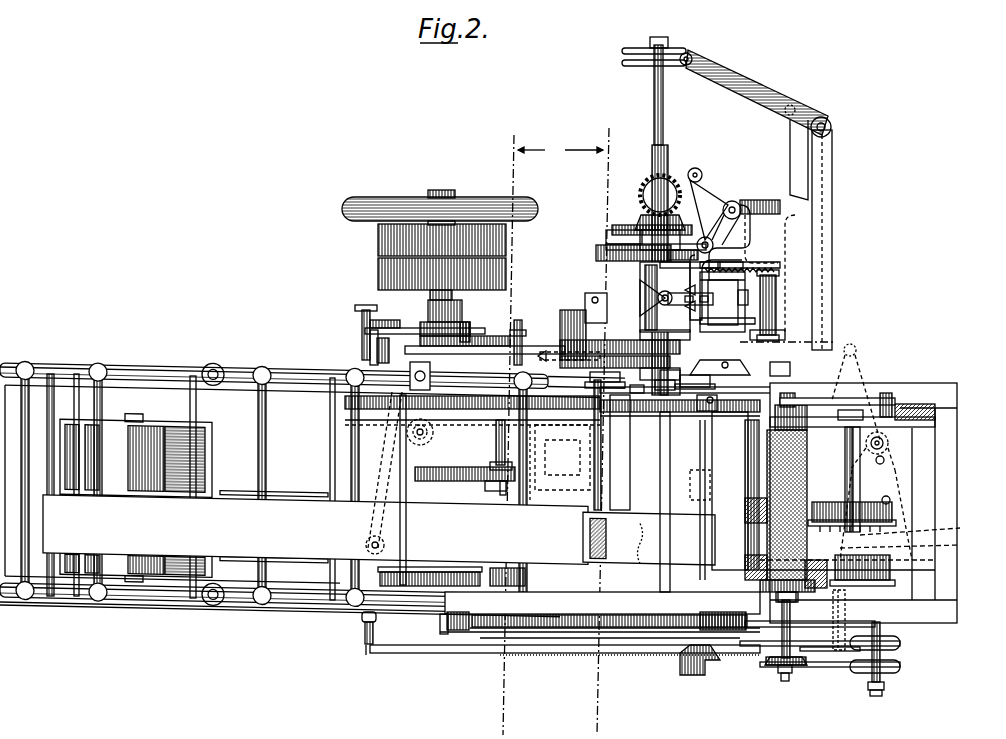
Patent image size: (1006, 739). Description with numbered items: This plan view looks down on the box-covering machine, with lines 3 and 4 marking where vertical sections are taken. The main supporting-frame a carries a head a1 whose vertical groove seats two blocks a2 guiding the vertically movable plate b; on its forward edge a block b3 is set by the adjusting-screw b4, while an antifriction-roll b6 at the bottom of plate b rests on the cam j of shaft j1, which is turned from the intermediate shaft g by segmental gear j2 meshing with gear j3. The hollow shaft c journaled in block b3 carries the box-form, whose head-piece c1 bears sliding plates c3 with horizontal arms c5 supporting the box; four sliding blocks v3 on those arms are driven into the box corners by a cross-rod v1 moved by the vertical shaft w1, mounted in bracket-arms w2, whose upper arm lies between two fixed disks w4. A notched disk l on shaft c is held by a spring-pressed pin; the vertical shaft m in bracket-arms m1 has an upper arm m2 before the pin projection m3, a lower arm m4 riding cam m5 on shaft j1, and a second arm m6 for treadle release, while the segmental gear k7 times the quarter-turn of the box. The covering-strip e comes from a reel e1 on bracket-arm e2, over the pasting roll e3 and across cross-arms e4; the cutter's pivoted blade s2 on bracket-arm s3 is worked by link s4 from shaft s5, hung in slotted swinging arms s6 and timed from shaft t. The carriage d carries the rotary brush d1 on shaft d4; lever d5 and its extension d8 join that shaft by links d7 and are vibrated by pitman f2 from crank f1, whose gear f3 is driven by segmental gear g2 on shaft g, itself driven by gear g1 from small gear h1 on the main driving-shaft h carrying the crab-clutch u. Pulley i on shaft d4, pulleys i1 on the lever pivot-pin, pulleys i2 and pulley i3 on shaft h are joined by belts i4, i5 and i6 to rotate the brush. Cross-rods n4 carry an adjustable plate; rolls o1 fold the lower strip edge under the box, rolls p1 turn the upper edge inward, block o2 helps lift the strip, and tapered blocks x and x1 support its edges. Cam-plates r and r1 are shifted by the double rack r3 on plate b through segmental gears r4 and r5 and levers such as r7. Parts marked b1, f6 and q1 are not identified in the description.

The section line 3 is at (589, 422).
The section line 4 is at (524, 425).
The main supporting-frame a is at (600, 612).
The plate or head a1 is at (728, 382).
The blocks a2 is at (715, 286).
The plate b is at (750, 305).
The slide frame b1 is at (735, 298).
The block b3 is at (690, 288).
The adjusting-screw b4 is at (645, 299).
The antifriction-roll b6 is at (665, 326).
The hollow shaft c is at (645, 192).
The head-piece c1 is at (668, 395).
The sliding plates c3 is at (700, 380).
The arms c5 is at (606, 455).
The carriage d is at (752, 487).
The rotary brush d1 is at (787, 497).
The brush shaft d4 is at (772, 615).
The lever d5 is at (762, 660).
The link d7 is at (862, 395).
The fixed arm or extension d8 is at (861, 477).
The box-covering strip e is at (315, 529).
The reel e1 is at (310, 484).
The bracket-arm e2 is at (240, 363).
The moistening or pasting roll e3 is at (136, 497).
The cross-arms e4 is at (100, 428).
The crank f1 is at (466, 622).
The pitman f2 is at (460, 475).
The gear f3 is at (458, 570).
The link f6 is at (877, 538).
The intermediate shaft g is at (608, 403).
The gear g1 is at (578, 352).
The segmental gear g2 is at (510, 570).
The main driving-shaft h is at (455, 290).
The small gear h1 is at (455, 350).
The pulley i is at (820, 670).
The pulleys i1 is at (902, 640).
The pulleys i2 is at (762, 252).
The pulley i3 is at (561, 644).
The belt i4 is at (870, 670).
The belt i5 is at (815, 650).
The belt i6 is at (630, 665).
The cam j is at (590, 314).
The shaft j1 is at (660, 452).
The segmental gear j2 is at (582, 618).
The gear j3 is at (715, 620).
The segmental gear k7 is at (620, 258).
The disk l is at (660, 236).
The shaft m is at (732, 202).
The bracket-arms m1 is at (763, 231).
The arm m2 is at (745, 205).
The projection m3 is at (712, 245).
The arm m4 is at (706, 200).
The cam m5 is at (680, 205).
The arm m6 is at (705, 163).
The cross-rods n4 is at (876, 444).
The rolls o1 is at (880, 564).
The block o2 is at (836, 585).
The rolls p1 is at (815, 520).
The block q1 is at (812, 578).
The cam-plate r is at (715, 500).
The cam-plate r1 is at (560, 462).
The double rack r3 is at (660, 370).
The segmental gear r4 is at (747, 370).
The segmental gear r5 is at (612, 350).
The lever r7 is at (370, 523).
The pivoted blade s2 is at (405, 514).
The bracket-arm s3 is at (459, 410).
The link s4 is at (393, 322).
The shaft s5 is at (370, 320).
The swinging arms s6 is at (360, 332).
The shaft t is at (496, 445).
The crab-clutch u is at (433, 318).
The cross-rod v1 is at (635, 395).
The sliding blocks v3 is at (642, 420).
The shaft w1 is at (835, 128).
The bracket-arms w2 is at (830, 142).
The fixed disks w4 is at (680, 55).
The block x is at (750, 567).
The block x1 is at (750, 508).